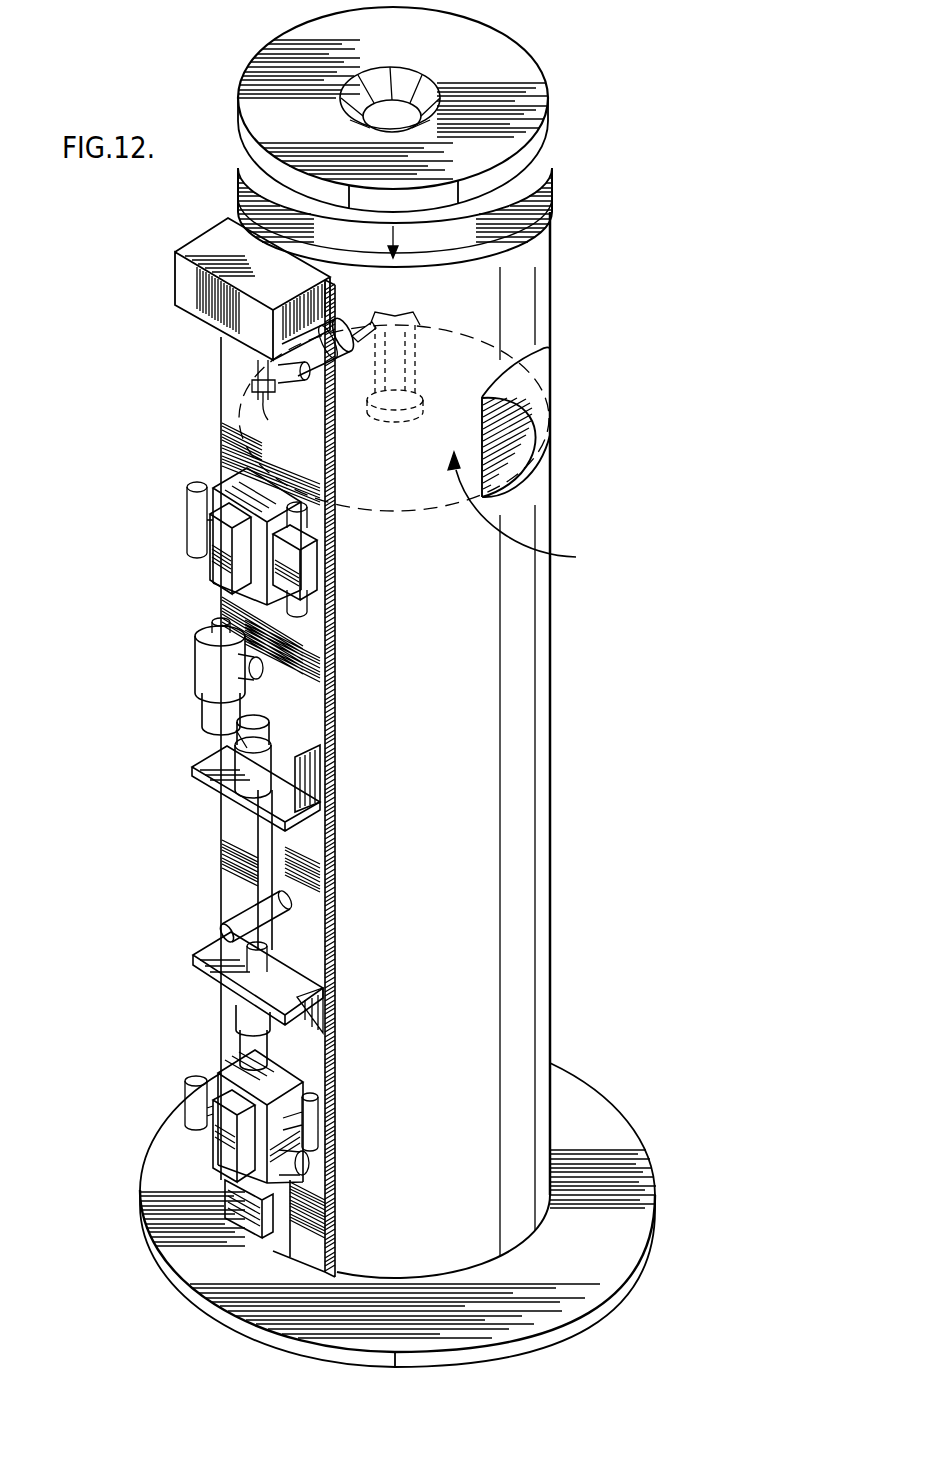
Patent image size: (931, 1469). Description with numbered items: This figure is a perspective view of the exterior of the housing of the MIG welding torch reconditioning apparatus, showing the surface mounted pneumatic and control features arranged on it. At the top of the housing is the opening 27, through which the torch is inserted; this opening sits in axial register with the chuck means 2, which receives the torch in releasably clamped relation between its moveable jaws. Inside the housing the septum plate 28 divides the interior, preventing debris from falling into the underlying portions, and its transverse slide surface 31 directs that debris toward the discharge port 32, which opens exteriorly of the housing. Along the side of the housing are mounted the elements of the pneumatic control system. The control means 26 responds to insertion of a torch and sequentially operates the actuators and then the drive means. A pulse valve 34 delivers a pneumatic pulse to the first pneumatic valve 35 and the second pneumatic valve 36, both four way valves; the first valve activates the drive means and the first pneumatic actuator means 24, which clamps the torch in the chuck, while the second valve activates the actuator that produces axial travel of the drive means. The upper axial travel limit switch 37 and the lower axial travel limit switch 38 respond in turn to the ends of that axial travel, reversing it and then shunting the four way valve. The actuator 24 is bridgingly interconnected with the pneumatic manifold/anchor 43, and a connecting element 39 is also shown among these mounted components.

The chuck means 2 is at (330, 278).
The first pneumatic actuator means 24 is at (310, 387).
The control means 26 is at (180, 462).
The opening 27 is at (422, 85).
The septum plate 28 is at (413, 476).
The transverse slide surface 31 is at (532, 510).
The discharge port 32 is at (545, 428).
The pulse valve 34 is at (195, 662).
The first pneumatic valve 35 is at (220, 565).
The second pneumatic valve 36 is at (218, 1163).
The upper axial travel limit switch 37 is at (292, 745).
The lower axial travel limit switch 38 is at (235, 1007).
The connecting tube 39 is at (227, 923).
The pneumatic manifold/anchor 43 is at (183, 295).